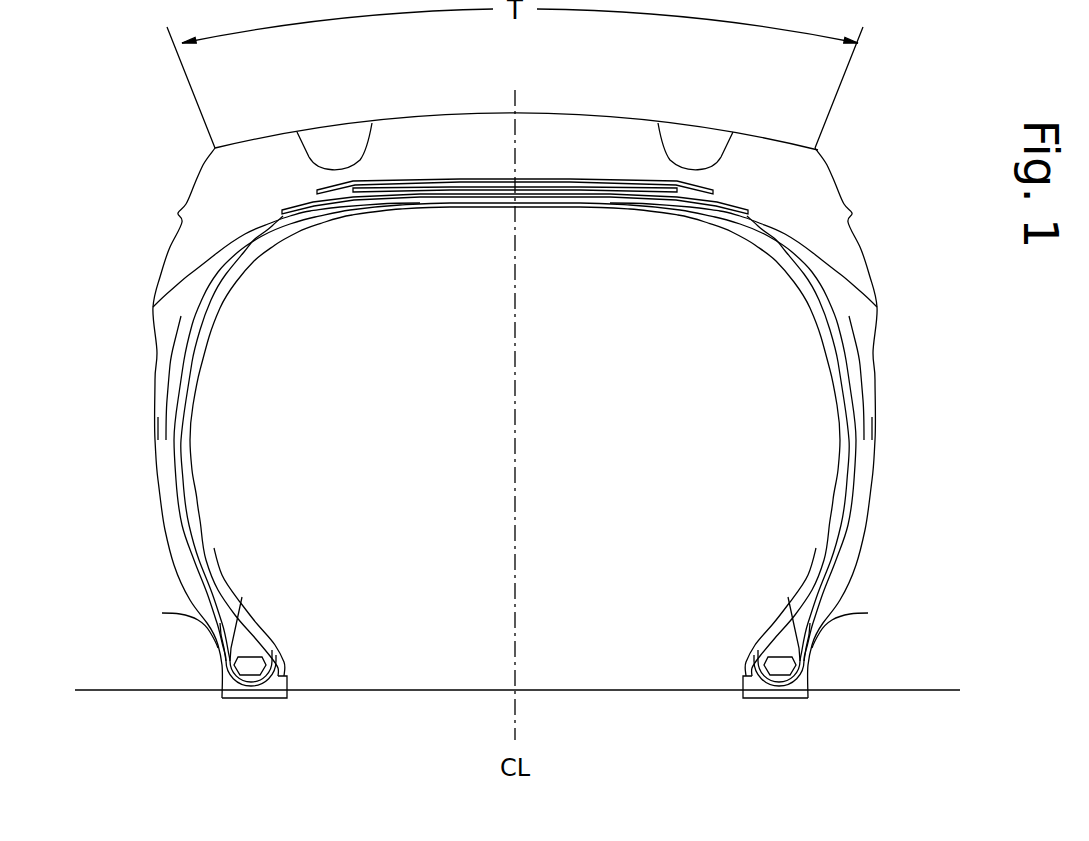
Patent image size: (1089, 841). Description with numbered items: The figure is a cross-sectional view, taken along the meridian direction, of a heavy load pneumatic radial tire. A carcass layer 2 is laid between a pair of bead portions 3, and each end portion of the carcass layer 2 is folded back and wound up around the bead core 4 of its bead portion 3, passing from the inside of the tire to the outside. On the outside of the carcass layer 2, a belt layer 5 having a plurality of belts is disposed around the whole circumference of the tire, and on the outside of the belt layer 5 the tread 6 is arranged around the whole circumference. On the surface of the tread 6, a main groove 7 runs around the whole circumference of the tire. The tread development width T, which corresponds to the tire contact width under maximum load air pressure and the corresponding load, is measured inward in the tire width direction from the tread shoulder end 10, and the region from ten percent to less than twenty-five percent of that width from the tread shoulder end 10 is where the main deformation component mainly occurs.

The tread shoulder end 10 is at (213, 147).
The carcass layer 2 is at (190, 486).
The bead portion 3 is at (275, 616).
The bead core 4 is at (250, 667).
The belt layer 5 is at (452, 178).
The tread 6 is at (580, 137).
The main groove 7 is at (352, 146).